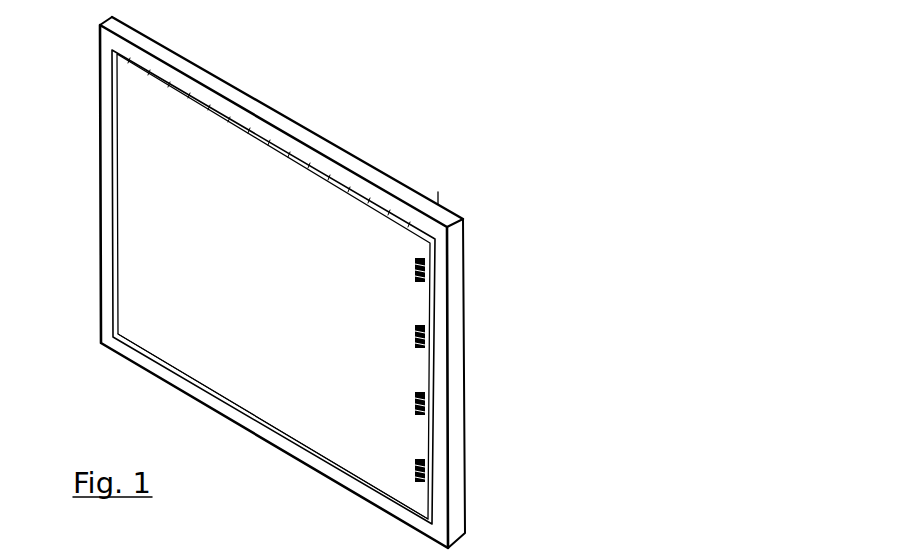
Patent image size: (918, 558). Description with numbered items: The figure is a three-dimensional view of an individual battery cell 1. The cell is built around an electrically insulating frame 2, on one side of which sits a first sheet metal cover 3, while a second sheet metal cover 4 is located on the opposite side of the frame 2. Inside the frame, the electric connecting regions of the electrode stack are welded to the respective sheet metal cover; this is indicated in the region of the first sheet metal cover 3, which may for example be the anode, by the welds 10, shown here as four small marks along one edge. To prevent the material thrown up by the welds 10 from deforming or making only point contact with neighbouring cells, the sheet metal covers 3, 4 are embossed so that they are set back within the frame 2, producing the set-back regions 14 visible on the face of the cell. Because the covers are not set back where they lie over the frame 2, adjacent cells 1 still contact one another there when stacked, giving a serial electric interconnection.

The individual battery cell 1 is at (274, 274).
The electrically insulating frame 2 is at (397, 191).
The first sheet metal cover 3 is at (273, 165).
The second sheet metal cover 4 is at (439, 203).
The welds 10 is at (425, 268).
The set-back regions 14 is at (208, 180).